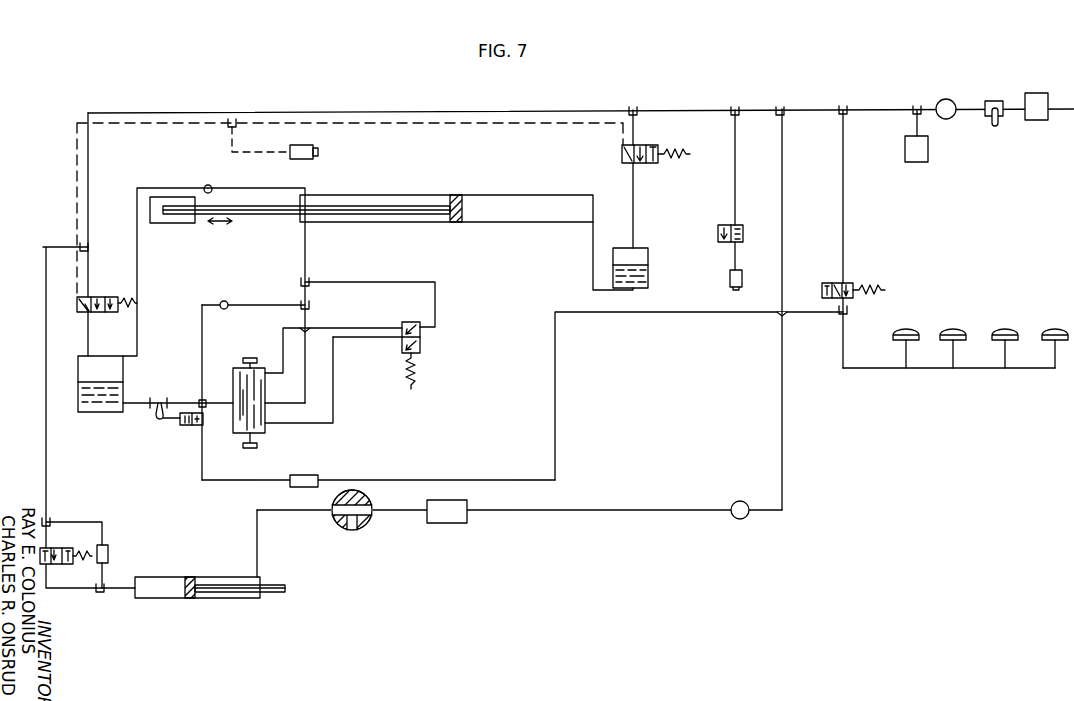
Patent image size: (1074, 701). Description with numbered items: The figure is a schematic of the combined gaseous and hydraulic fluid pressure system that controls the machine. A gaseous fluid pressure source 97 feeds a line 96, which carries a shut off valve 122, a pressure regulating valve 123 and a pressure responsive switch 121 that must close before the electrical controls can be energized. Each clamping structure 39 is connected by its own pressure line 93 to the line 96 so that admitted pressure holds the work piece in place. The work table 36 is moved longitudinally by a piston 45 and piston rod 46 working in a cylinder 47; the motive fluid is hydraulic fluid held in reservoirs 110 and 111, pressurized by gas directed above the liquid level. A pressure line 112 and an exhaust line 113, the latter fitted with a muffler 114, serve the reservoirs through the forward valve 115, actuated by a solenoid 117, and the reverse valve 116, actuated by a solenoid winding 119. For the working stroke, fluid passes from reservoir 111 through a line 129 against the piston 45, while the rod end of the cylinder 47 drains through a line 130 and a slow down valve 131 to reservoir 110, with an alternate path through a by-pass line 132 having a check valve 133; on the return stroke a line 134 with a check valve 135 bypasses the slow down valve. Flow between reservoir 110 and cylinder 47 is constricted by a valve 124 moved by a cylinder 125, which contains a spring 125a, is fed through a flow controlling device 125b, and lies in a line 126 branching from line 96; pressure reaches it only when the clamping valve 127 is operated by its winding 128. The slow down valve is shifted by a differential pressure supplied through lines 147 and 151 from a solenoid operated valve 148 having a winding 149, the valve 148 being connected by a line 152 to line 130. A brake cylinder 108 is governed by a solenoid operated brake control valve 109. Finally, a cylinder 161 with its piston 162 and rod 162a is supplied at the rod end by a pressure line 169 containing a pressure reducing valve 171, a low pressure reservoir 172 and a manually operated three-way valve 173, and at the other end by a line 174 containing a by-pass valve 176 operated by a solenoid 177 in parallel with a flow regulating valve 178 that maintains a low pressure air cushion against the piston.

The work table 36 is at (165, 224).
The clamping structure 39 is at (926, 315).
The piston 45 is at (462, 197).
The piston rod 46 is at (251, 215).
The cylinder 47 is at (387, 195).
The pressure line 93 is at (907, 355).
The line 96 is at (884, 110).
The gaseous fluid pressure source 97 is at (1039, 93).
The brake cylinder 108 is at (729, 282).
The brake control valve 109 is at (744, 232).
The reservoir 110 is at (124, 392).
The reservoir 111 is at (650, 272).
The pressure line 112 is at (661, 111).
The exhaust line 113 is at (490, 125).
The muffler 114 is at (300, 159).
The forward valve 115 is at (620, 152).
The reverse valve 116 is at (93, 296).
The solenoid 117 is at (684, 156).
The solenoid winding 119 is at (122, 313).
The pressure responsive switch 121 is at (929, 150).
The shut off valve 122 is at (996, 100).
The pressure regulating valve 123 is at (951, 99).
The valve 124 is at (160, 402).
The cylinder 125 is at (190, 427).
The spring 125a is at (175, 422).
The flow controlling device 125b is at (308, 488).
The line 126 is at (556, 405).
The clamping valve 127 is at (823, 283).
The winding 128 is at (885, 289).
The line 129 is at (593, 257).
The line 130 is at (213, 399).
The slow down valve 131 is at (266, 430).
The by-pass line 132 is at (256, 188).
The check valve 133 is at (220, 176).
The line 134 is at (200, 333).
The check valve 135 is at (227, 302).
The line 147 is at (337, 328).
The solenoid operated valve 148 is at (422, 337).
The solenoid winding 149 is at (414, 378).
The line 151 is at (334, 409).
The line 152 is at (436, 302).
The cylinder 161 is at (172, 577).
The piston 162 is at (190, 599).
The piston rod 162a is at (245, 593).
The pressure line 169 is at (783, 445).
The pressure reducing valve 171 is at (742, 519).
The low pressure reservoir 172 is at (440, 524).
The three-way valve 173 is at (365, 528).
The line 174 is at (47, 481).
The by-pass valve 176 is at (62, 550).
The solenoid 177 is at (80, 566).
The flow regulating valve 178 is at (109, 553).